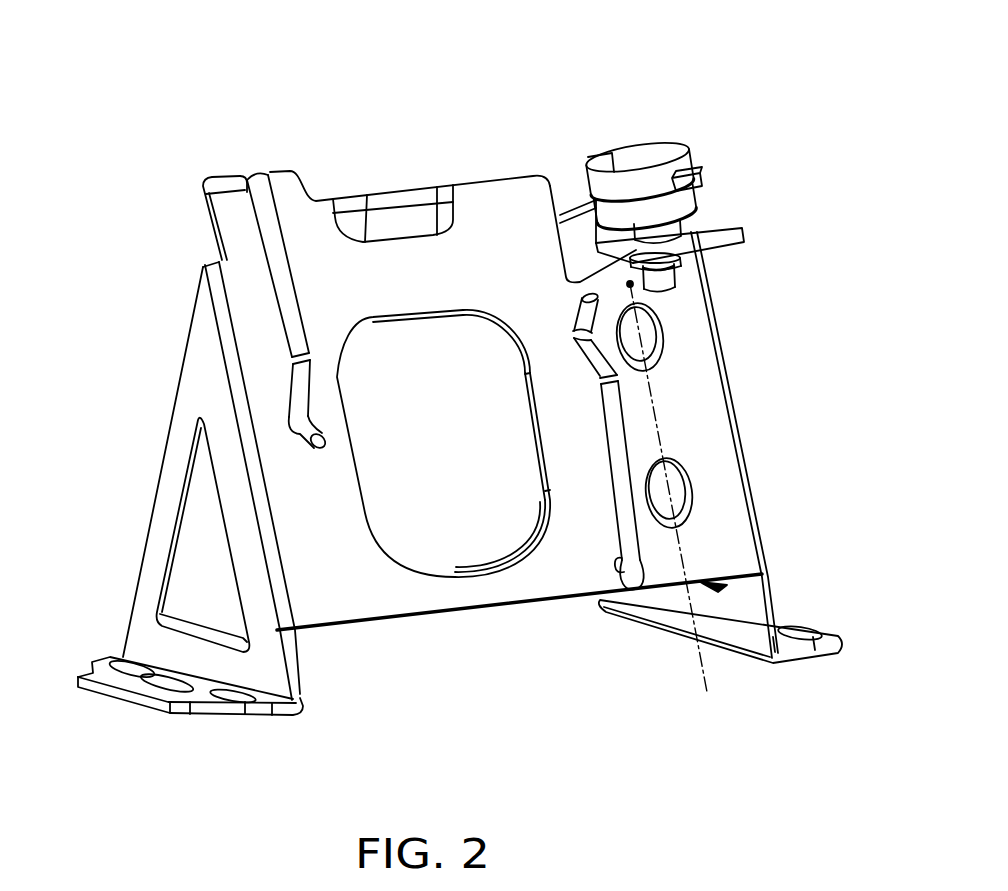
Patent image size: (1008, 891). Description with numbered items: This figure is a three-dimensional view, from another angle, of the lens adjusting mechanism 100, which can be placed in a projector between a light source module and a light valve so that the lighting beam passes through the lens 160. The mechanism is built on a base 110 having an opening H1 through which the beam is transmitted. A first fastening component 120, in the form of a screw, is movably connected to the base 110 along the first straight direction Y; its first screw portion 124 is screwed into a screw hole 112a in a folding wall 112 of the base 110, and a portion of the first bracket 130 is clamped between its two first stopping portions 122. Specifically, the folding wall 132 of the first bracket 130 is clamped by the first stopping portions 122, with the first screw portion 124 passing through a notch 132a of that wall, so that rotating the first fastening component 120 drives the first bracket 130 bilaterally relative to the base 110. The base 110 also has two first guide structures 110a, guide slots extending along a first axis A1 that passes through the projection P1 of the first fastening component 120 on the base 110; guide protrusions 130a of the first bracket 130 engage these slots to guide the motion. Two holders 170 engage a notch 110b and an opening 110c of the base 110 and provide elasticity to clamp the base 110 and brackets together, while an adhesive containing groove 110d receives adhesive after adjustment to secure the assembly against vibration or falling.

The lens adjusting mechanism 100 is at (832, 781).
The base 110 is at (733, 527).
The first guide structures 110a is at (668, 358).
The notch 110b is at (238, 186).
The opening 110c is at (567, 328).
The adhesive containing groove 110d is at (403, 197).
The folding wall 112 is at (745, 233).
The screw hole 112a is at (677, 289).
The first fastening component 120 is at (703, 193).
The first stopping portions 122 is at (652, 200).
The first screw portion 124 is at (683, 264).
The first bracket 130 is at (592, 237).
The guide protrusions 130a is at (655, 338).
The folding wall 132 is at (700, 180).
The notch 132a is at (672, 170).
The lens 160 is at (460, 547).
The holders 170 is at (270, 214).
The opening H1 is at (426, 565).
The projection P1 is at (628, 283).
The first axis A1 is at (678, 504).